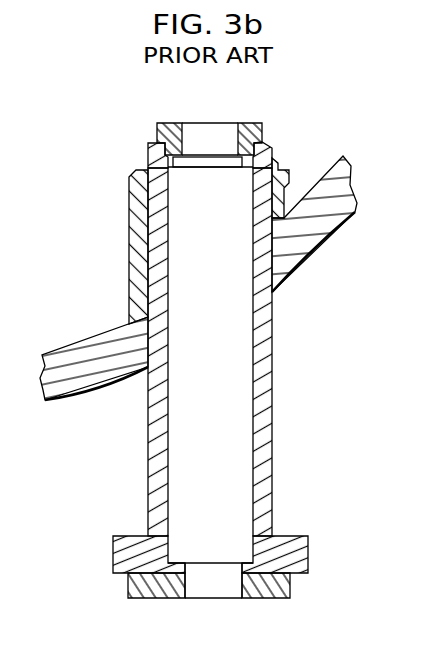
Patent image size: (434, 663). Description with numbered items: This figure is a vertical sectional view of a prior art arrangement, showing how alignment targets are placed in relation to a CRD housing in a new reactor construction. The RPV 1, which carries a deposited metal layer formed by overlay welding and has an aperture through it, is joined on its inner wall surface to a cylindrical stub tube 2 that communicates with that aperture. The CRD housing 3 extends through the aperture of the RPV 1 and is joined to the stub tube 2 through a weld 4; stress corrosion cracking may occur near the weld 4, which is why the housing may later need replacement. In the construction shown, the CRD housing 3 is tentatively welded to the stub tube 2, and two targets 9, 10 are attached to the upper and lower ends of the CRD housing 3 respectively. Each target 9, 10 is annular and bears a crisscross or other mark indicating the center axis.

The RPV 1 is at (320, 250).
The stub tube 2 is at (130, 255).
The CRD housing 3 is at (147, 143).
The weld 4 is at (138, 172).
The target 9 is at (160, 122).
The target 10 is at (140, 600).